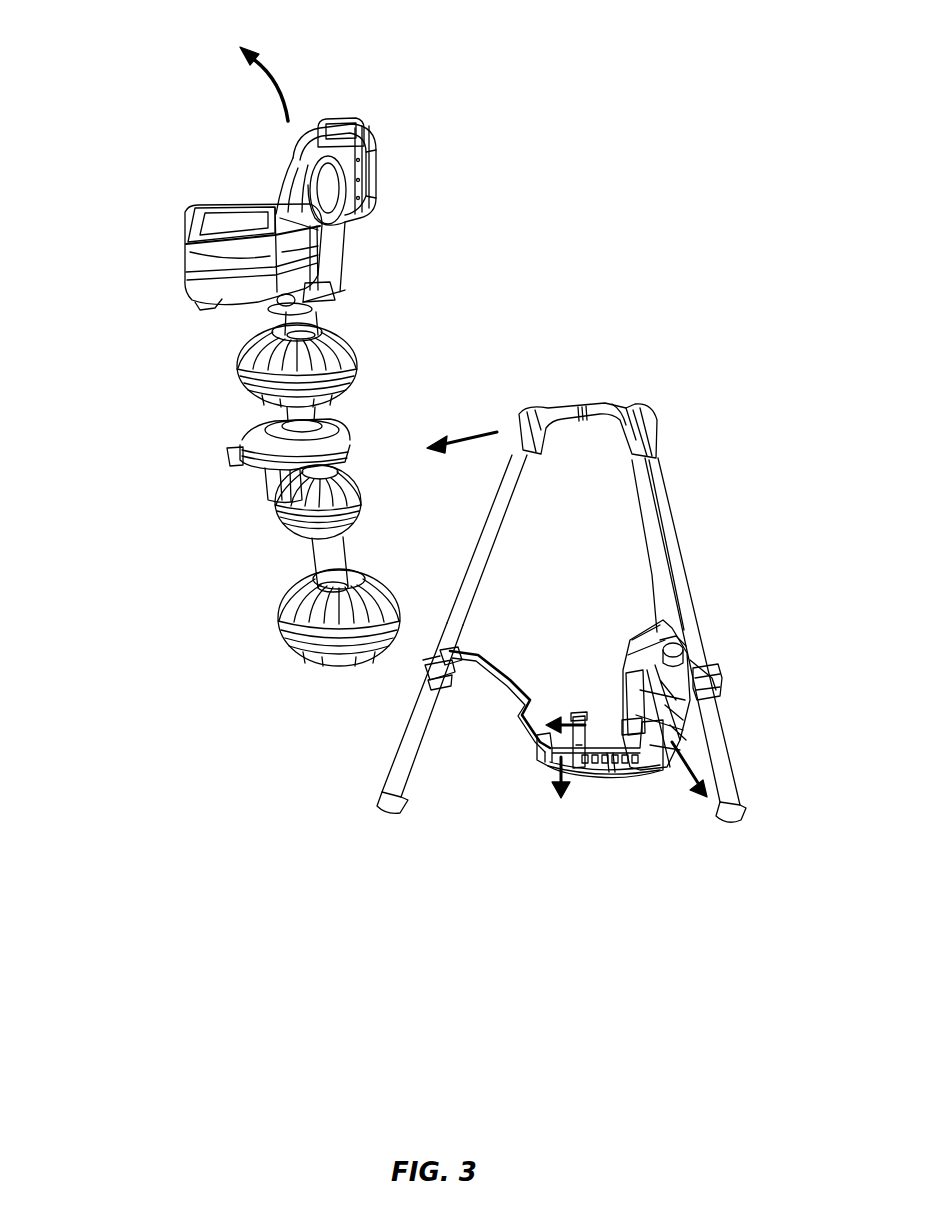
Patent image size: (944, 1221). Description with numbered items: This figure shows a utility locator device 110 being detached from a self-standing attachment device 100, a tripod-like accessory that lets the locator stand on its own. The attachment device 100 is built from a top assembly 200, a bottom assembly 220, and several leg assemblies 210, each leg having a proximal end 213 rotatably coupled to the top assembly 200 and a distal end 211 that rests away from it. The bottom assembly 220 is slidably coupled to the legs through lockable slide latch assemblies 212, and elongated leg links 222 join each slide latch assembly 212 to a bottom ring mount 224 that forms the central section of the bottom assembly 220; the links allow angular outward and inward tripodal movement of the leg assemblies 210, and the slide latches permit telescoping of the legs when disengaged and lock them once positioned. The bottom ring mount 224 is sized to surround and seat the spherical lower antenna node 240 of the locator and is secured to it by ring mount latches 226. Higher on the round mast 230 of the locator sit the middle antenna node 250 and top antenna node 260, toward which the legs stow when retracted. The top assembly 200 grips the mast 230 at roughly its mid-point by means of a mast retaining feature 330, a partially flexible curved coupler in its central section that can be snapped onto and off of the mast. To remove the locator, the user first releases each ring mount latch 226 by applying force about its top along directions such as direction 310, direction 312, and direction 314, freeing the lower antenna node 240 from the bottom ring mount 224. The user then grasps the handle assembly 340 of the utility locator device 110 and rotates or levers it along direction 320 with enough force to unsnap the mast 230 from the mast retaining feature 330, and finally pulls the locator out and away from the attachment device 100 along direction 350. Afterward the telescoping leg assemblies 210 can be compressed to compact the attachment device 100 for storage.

The self-standing attachment device 100 is at (625, 290).
The utility locator device 110 is at (174, 118).
The top assembly 200 is at (645, 410).
The leg assemblies 210 is at (485, 519).
The distal end 211 is at (400, 748).
The slide latch assembly 212 is at (455, 682).
The proximal end 213 is at (507, 468).
The bottom assembly 220 is at (663, 782).
The leg links 222 is at (498, 648).
The bottom ring mount 224 is at (607, 777).
The ring mount latches 226 is at (575, 716).
The mast 230 is at (290, 445).
The lower antenna node 240 is at (275, 640).
The middle antenna node 250 is at (265, 524).
The top antenna node 260 is at (232, 385).
The direction 310 is at (552, 782).
The direction 312 is at (568, 718).
The direction 314 is at (710, 748).
The direction 320 is at (497, 432).
The mast retaining feature 330 is at (605, 412).
The handle assembly 340 is at (280, 179).
The direction 350 is at (273, 82).